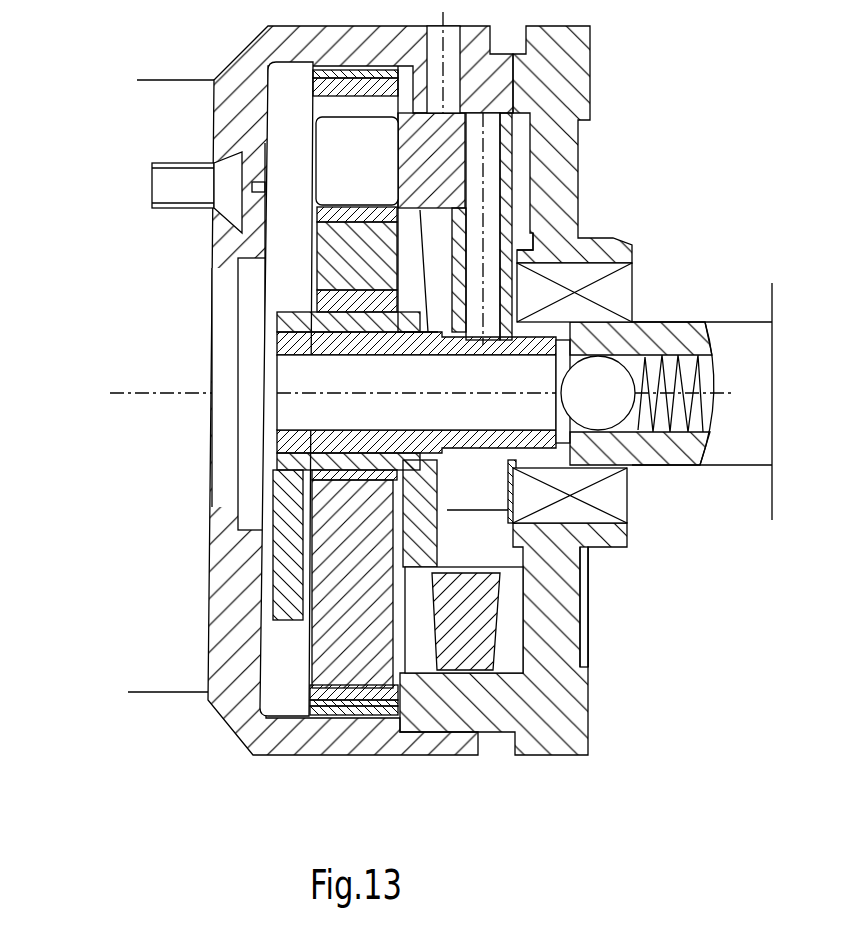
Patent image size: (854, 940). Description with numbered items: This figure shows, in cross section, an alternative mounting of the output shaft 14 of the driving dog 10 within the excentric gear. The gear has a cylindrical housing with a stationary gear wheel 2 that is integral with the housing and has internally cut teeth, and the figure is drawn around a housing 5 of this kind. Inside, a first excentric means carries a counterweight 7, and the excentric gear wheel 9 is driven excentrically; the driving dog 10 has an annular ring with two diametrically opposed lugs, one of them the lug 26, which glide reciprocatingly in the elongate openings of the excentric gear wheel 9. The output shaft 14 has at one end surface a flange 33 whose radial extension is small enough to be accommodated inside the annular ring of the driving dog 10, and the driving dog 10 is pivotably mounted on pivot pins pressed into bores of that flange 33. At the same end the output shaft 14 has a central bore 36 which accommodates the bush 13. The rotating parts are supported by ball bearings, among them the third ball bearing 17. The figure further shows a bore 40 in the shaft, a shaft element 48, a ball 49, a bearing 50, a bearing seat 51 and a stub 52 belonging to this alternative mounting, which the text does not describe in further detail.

The stationary gear wheel 2 is at (362, 700).
The housing 5 is at (420, 535).
The counterweight 7 is at (358, 537).
The excentric gear wheel 9 is at (350, 578).
The driving dog 10 is at (505, 152).
The bush 13 is at (537, 357).
The output shaft 14 is at (588, 550).
The third ball bearing 17 is at (590, 553).
The lug 26 is at (364, 175).
The flange 33 is at (507, 222).
The central bore 36 is at (636, 430).
The shaft bore 40 is at (491, 427).
The output shaft 48 is at (660, 445).
The ball 49 is at (609, 394).
The ball bearing 50 is at (557, 495).
The bearing seat 51 is at (573, 342).
The stub shaft 52 is at (230, 388).